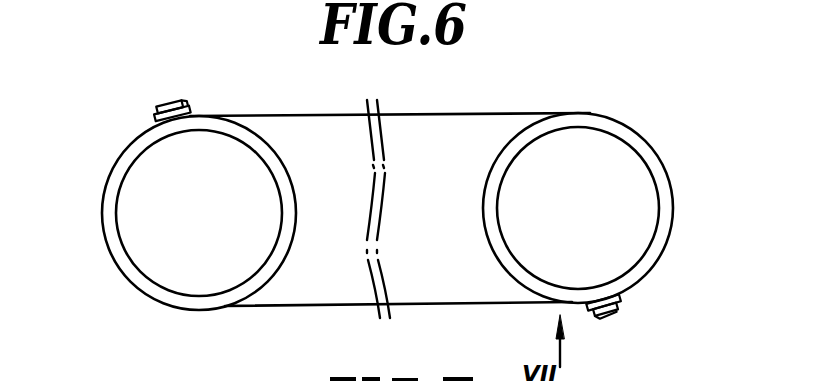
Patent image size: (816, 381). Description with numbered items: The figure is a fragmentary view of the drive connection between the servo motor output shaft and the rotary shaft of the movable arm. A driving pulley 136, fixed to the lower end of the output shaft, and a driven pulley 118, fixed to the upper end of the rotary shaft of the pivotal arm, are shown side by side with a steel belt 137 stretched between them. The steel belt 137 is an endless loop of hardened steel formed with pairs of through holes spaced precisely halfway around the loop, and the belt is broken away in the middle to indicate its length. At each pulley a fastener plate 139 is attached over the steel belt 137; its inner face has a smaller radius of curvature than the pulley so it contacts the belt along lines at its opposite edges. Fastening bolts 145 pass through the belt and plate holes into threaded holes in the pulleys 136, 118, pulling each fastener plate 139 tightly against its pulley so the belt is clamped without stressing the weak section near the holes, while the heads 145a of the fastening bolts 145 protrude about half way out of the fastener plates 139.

The driven pulley 118 is at (123, 268).
The driving pulley 136 is at (643, 140).
The steel belt 137 is at (482, 112).
The fastener plate 139 is at (153, 118).
The fastening bolt 145 is at (169, 103).
The head of fastening bolt 145a is at (188, 106).